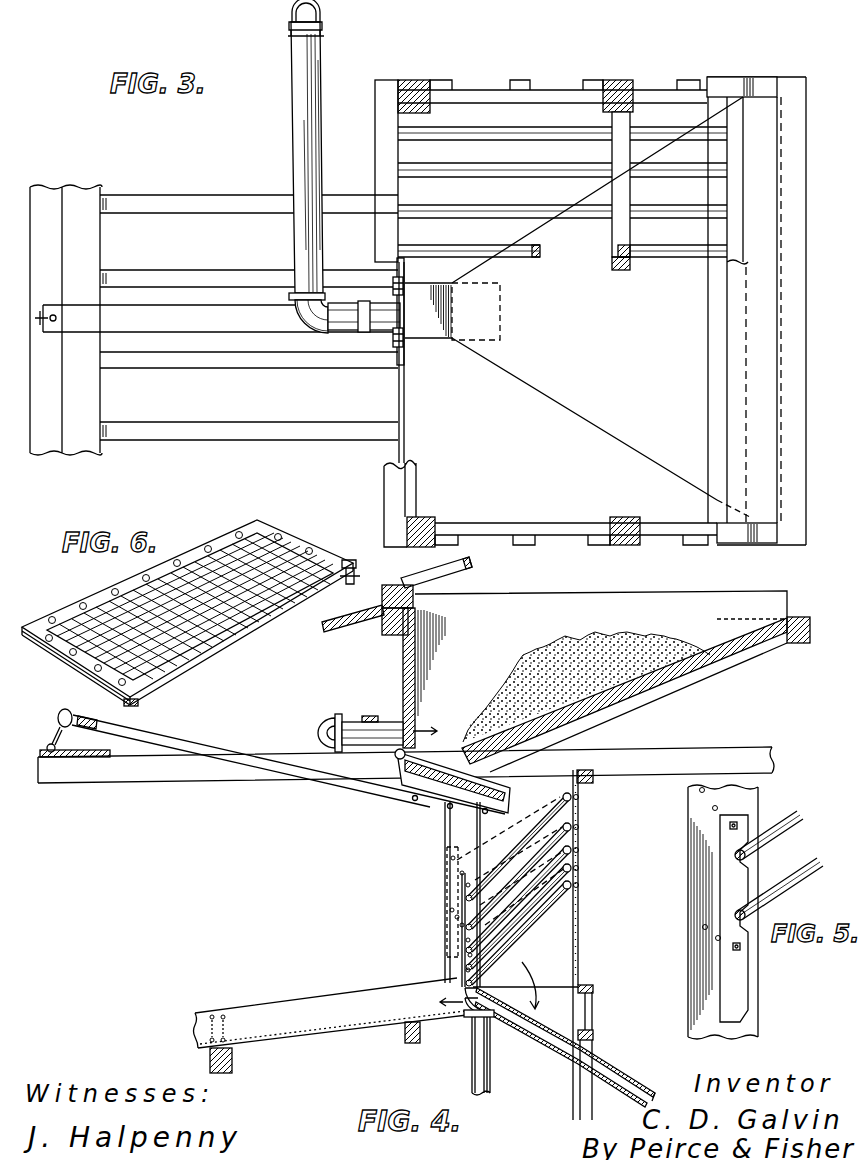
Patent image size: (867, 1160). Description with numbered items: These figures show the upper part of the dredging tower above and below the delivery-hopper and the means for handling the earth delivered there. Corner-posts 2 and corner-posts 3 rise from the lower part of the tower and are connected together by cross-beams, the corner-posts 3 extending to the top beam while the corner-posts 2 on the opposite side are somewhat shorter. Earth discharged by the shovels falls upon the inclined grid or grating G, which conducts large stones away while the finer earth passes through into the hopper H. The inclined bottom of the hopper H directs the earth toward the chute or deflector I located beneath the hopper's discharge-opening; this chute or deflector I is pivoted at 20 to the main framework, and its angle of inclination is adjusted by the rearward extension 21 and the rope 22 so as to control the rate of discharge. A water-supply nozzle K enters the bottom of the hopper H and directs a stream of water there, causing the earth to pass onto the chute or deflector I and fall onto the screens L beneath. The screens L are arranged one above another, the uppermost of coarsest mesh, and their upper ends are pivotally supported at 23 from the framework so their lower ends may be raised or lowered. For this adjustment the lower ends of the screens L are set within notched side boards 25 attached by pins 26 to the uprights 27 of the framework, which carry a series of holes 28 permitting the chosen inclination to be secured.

In FIG. 3, the corner-posts 2 is at (762, 77).
In FIG. 3, the corner-posts 3 is at (413, 83).
In FIG. 3, the pivot 20 is at (395, 286).
In FIG. 4, the pivot 20 is at (396, 757).
In FIG. 3, the rearward extension 21 is at (217, 318).
In FIG. 4, the rearward extension 21 is at (155, 733).
In FIG. 4, the rope 22 is at (62, 736).
In FIG. 4, the pivotal support 23 is at (562, 796).
In FIG. 5, the notched side boards 25 is at (733, 891).
In FIG. 5, the pins 26 is at (733, 950).
In FIG. 5, the uprights 27 is at (700, 845).
In FIG. 5, the holes 28 is at (704, 929).
In FIG. 3, the inclined grid or grating G is at (592, 218).
In FIG. 3, the hopper H is at (602, 351).
In FIG. 3, the chute or deflector I is at (577, 307).
In FIG. 4, the chute or deflector I is at (436, 784).
In FIG. 3, the water-supply nozzle K is at (385, 332).
In FIG. 4, the water-supply nozzle K is at (392, 722).
In FIG. 6, the screens L is at (205, 643).
In FIG. 4, the screens L is at (520, 937).
In FIG. 5, the screens L is at (790, 827).
In FIG. 4, the discharge pipe Y is at (491, 1066).